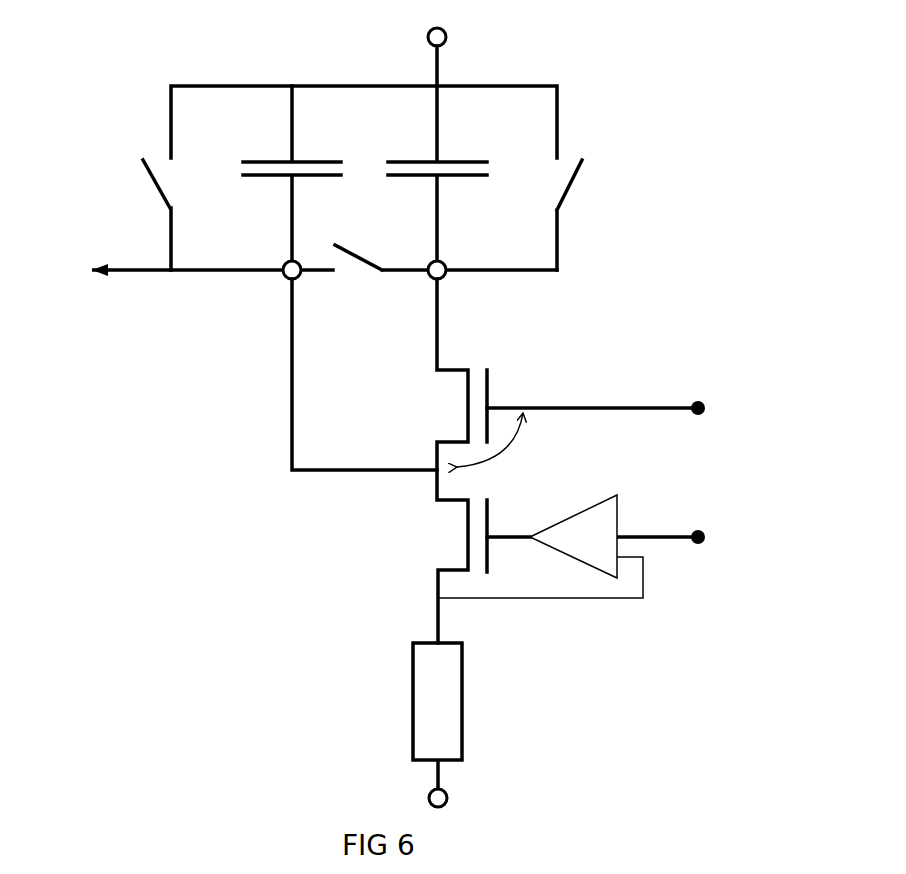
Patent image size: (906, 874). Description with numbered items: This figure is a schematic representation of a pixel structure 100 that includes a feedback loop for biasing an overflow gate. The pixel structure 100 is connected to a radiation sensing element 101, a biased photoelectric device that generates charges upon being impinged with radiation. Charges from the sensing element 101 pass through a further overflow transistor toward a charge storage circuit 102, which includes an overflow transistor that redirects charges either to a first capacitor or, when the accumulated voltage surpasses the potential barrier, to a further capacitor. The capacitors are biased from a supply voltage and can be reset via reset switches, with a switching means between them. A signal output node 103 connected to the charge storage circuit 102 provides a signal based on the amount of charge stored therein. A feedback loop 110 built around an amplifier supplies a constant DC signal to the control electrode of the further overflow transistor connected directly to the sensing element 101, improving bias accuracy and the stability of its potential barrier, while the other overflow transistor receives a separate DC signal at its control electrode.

The pixel structure 100 is at (248, 622).
The radiation sensing element 101 is at (455, 680).
The charge storage circuit 102 is at (137, 83).
The signal output node 103 is at (165, 282).
The feedback loop 110 is at (650, 620).